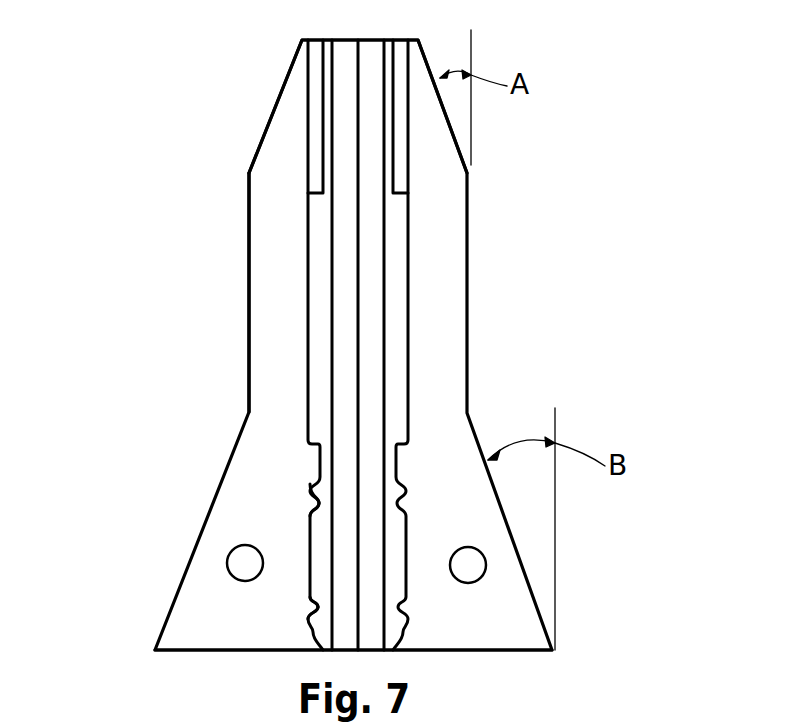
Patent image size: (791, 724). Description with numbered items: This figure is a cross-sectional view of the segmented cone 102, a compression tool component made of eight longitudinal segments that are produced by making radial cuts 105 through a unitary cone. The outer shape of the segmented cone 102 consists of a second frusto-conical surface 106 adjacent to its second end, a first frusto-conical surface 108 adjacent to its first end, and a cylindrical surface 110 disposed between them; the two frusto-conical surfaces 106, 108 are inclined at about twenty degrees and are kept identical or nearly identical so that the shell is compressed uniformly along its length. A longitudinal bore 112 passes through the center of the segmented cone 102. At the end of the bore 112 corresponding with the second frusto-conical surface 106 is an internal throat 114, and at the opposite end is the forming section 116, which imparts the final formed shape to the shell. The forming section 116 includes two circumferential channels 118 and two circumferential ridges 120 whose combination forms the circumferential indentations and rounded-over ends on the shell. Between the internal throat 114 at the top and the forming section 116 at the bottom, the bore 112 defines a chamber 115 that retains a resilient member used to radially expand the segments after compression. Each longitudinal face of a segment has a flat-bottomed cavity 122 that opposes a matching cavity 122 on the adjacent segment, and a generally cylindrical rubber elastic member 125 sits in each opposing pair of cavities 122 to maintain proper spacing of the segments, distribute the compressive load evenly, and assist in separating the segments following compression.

The segmented cone 102 is at (480, 268).
The radial cuts 105 is at (333, 40).
The second frusto-conical surface 106 is at (275, 107).
The first frusto-conical surface 108 is at (160, 632).
The cylindrical surface 110 is at (248, 290).
The longitudinal bore 112 is at (372, 312).
The internal throat 114 is at (402, 100).
The chamber 115 is at (313, 257).
The forming section 116 is at (392, 550).
The circumferential channels 118 is at (313, 490).
The circumferential ridges 120 is at (318, 507).
The cavity 122 is at (487, 567).
The elastic members 125 is at (244, 561).